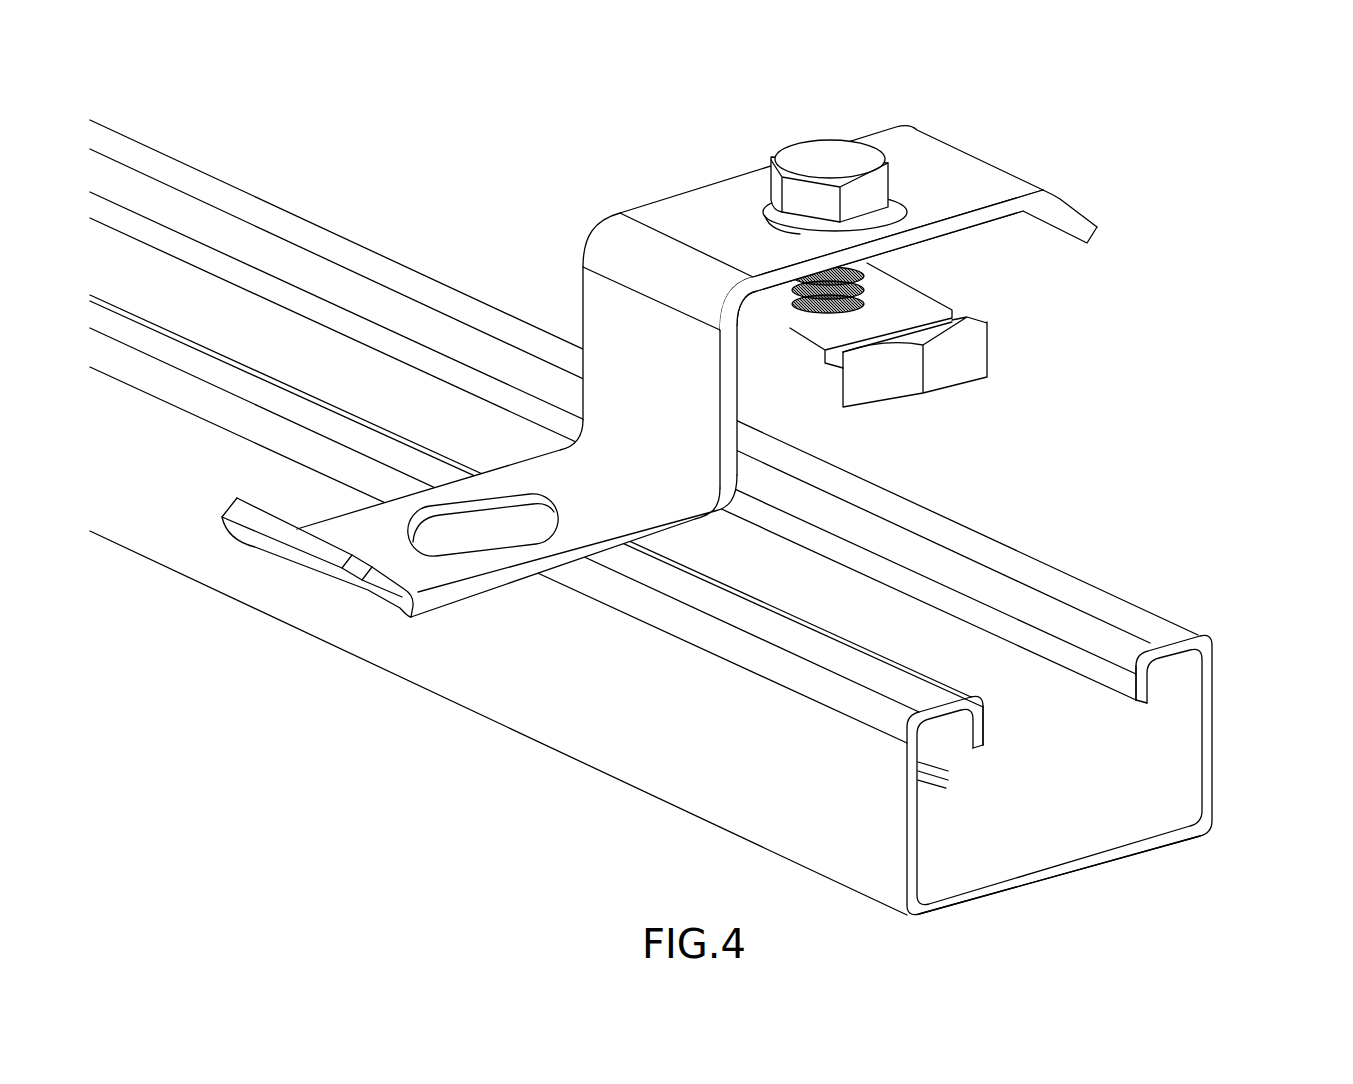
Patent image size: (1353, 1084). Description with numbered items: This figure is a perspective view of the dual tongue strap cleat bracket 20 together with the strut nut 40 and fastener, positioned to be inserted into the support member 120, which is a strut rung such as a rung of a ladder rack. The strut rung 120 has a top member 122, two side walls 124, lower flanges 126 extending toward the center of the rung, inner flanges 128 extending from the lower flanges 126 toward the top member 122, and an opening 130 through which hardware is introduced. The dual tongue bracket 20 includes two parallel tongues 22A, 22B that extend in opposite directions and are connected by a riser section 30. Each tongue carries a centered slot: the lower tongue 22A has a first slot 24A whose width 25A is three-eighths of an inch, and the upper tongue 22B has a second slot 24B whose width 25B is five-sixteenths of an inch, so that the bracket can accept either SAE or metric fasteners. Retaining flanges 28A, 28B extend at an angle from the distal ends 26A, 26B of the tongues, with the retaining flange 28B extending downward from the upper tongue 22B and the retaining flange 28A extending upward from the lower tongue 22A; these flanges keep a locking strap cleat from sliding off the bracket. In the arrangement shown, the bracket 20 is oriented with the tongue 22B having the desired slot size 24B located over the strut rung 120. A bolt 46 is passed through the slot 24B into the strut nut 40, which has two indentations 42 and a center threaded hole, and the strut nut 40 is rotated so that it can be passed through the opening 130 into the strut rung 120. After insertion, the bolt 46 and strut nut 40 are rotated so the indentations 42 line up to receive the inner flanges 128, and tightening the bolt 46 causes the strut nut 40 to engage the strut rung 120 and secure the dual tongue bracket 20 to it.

The dual tongue strap cleat bracket 20 is at (502, 100).
The lower tongue 22A is at (435, 583).
The upper tongue 22B is at (903, 196).
The first slot 24A is at (493, 540).
The second slot 24B is at (895, 187).
The width of first slot 25A is at (390, 483).
The width of second slot 25B is at (808, 228).
The distal end of lower tongue 26A is at (338, 587).
The distal end of upper tongue 26B is at (1037, 177).
The retaining flange 28A is at (287, 553).
The retaining flange 28B is at (1080, 224).
The riser section 30 is at (680, 452).
The strut nut 40 is at (905, 305).
The indentations 42 is at (917, 323).
The bolt 46 is at (870, 186).
The support member 120 is at (699, 525).
The top member 122 is at (1047, 828).
The side walls 124 is at (1160, 747).
The lower flanges 126 is at (1135, 615).
The inner flanges 128 is at (1115, 674).
The opening 130 is at (950, 655).